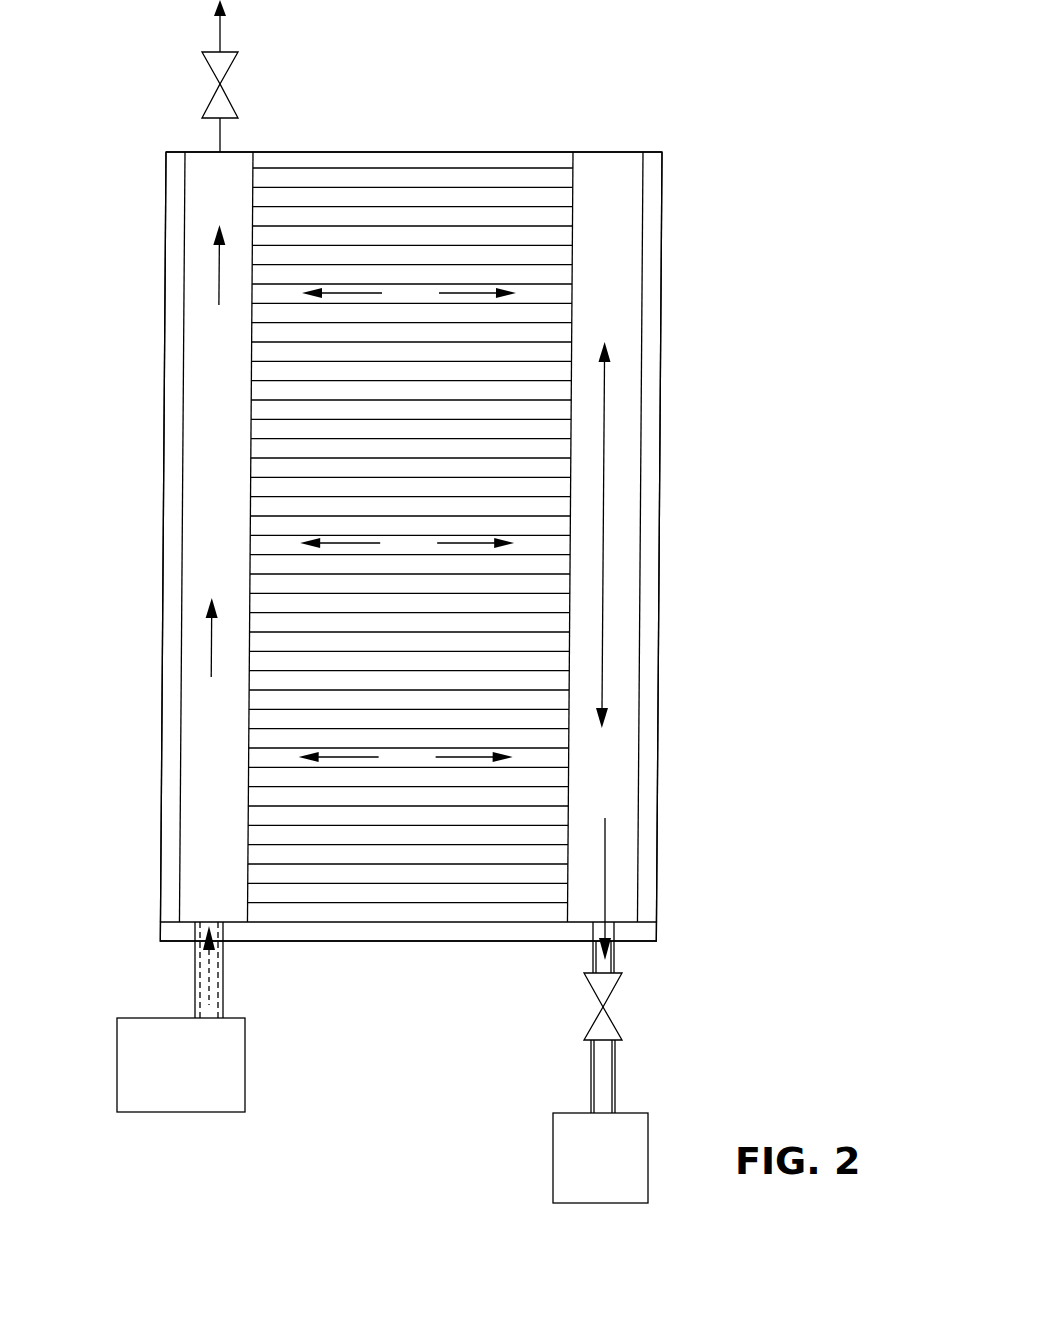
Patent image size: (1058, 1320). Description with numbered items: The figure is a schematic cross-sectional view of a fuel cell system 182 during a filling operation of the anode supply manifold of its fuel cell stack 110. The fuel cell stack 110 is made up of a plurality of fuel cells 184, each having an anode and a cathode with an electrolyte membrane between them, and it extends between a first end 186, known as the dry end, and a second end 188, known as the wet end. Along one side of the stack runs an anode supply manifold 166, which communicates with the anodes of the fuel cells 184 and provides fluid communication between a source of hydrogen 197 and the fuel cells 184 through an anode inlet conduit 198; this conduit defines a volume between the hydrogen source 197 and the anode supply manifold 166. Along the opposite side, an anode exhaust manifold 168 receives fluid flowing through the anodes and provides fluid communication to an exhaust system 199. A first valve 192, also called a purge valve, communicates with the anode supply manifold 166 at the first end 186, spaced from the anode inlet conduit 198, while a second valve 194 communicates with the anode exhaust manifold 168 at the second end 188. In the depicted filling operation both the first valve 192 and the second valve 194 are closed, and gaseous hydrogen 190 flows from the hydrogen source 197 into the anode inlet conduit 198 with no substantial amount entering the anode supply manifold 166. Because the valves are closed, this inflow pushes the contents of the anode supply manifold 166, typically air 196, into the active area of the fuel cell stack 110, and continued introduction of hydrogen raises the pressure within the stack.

The fuel cell stack 110 is at (533, 142).
The anode supply manifold 166 is at (180, 750).
The anode exhaust manifold 168 is at (641, 651).
The fuel cell system 182 is at (802, 148).
The fuel cells 184 is at (267, 423).
The first end 186 is at (428, 151).
The second end 188 is at (426, 942).
The gaseous hydrogen 190 is at (205, 980).
The first valve 192 is at (204, 70).
The second valve 194 is at (613, 990).
The air 196 is at (218, 272).
The source of hydrogen 197 is at (116, 1053).
The anode inlet conduit 198 is at (222, 975).
The exhaust system 199 is at (553, 1170).